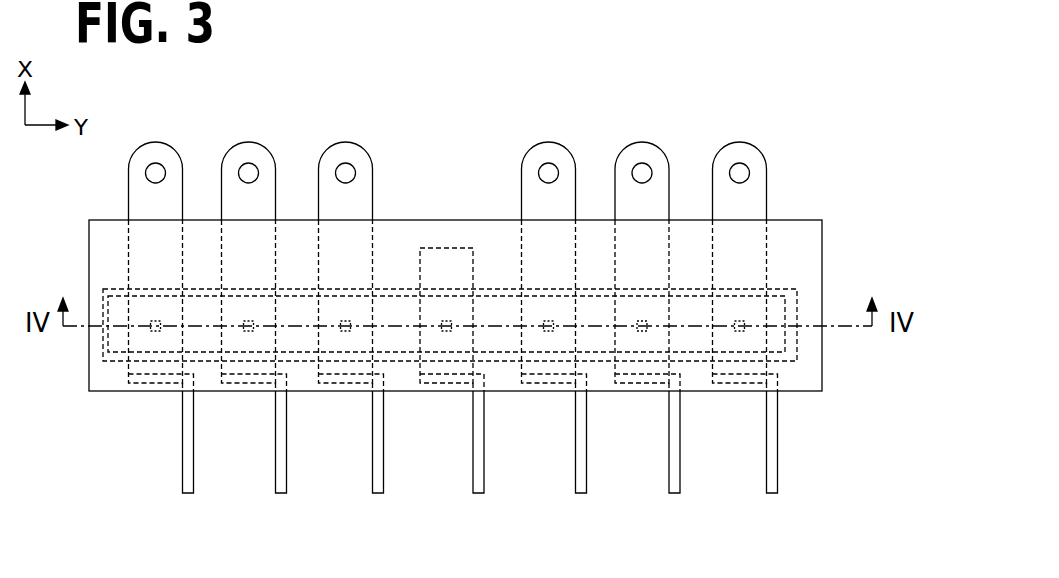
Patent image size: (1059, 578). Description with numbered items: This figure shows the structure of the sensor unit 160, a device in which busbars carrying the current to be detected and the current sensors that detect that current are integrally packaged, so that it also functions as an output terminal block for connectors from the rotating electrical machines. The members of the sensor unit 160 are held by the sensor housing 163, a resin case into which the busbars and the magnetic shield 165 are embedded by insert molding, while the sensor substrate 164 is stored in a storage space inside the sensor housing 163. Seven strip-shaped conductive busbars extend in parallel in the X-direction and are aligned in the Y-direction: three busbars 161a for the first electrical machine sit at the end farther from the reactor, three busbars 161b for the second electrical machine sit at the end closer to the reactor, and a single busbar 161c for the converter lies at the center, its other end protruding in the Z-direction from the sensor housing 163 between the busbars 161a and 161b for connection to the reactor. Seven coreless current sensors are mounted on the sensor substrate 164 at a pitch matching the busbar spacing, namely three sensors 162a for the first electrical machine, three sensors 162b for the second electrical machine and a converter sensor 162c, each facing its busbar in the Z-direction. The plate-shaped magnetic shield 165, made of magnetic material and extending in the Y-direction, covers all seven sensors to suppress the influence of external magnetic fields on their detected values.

The sensor unit 160 is at (483, 273).
The busbar for the first electrical machine 161a is at (182, 493).
The busbar for the second electrical machine 161b is at (576, 493).
The busbar for the converter 161c is at (473, 493).
The sensor for the first electrical machine 162a is at (156, 318).
The sensor for the second electrical machine 162b is at (548, 318).
The converter sensor 162c is at (446, 318).
The sensor housing 163 is at (802, 263).
The sensor substrate 164 is at (798, 336).
The magnetic shield 165 is at (797, 358).